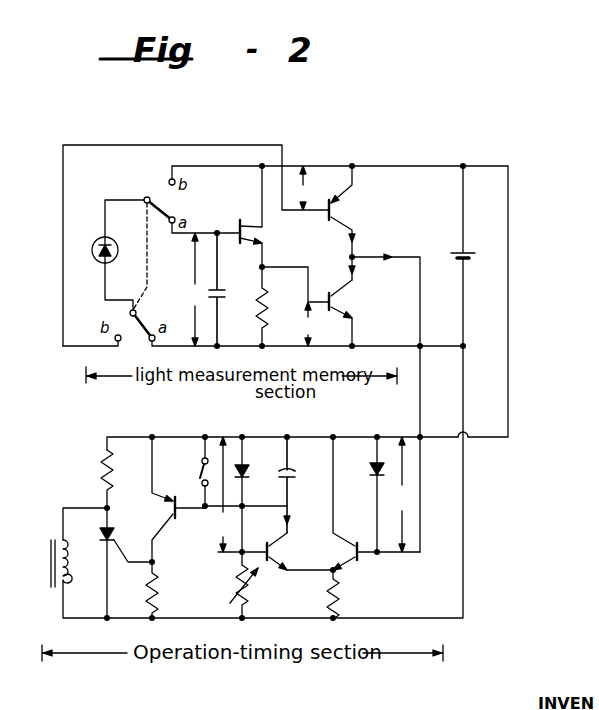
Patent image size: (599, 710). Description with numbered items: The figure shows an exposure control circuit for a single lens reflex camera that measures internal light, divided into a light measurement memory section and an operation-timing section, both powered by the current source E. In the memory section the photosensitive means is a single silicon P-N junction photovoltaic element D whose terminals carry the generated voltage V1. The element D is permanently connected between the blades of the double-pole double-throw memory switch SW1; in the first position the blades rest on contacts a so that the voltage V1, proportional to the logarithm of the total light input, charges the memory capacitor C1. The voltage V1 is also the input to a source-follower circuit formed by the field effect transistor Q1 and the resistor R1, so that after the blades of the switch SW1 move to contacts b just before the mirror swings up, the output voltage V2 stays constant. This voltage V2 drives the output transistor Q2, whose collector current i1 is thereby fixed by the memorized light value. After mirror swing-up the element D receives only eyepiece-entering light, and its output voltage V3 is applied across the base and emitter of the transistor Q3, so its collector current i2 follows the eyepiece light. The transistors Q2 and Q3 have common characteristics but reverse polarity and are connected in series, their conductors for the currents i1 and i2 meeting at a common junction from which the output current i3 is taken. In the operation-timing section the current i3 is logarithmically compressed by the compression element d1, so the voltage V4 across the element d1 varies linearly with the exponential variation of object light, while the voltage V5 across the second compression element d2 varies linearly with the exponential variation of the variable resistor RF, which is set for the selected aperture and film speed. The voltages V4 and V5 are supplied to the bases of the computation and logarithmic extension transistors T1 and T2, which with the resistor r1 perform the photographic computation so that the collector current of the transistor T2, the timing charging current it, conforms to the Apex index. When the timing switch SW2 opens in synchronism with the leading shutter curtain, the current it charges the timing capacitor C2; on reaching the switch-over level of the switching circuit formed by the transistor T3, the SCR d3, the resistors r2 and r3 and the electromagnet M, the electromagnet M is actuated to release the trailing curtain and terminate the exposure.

The photovoltaic element D is at (110, 242).
The memory switch SW1 is at (149, 260).
The generated voltage V1 is at (195, 289).
The memory capacitor C1 is at (225, 289).
The field effect transistor Q1 is at (243, 216).
The resistor R1 is at (271, 306).
The output voltage of source-follower circuit V2 is at (308, 324).
The output voltage of photosensitive means V3 is at (304, 188).
The transistor Q3 is at (353, 211).
The collector current i1 is at (351, 274).
The collector current i2 is at (351, 244).
The output current i3 is at (386, 287).
The transistor Q2 is at (353, 313).
The current source E is at (470, 256).
The resistor r2 is at (98, 479).
The electromagnet M is at (52, 536).
The SCR d3 is at (116, 563).
The transistor T3 is at (178, 518).
The resistor r3 is at (143, 590).
The timing switch SW2 is at (184, 471).
The second logarithmic compression element d2 is at (251, 494).
The variable resistor RF is at (220, 585).
The voltage across second logarithmic compression element V5 is at (228, 494).
The timing capacitor C2 is at (294, 485).
The timing charging current it is at (290, 520).
The computation and logarithmic extension transistor T2 is at (270, 565).
The computation and logarithmic extension transistor T1 is at (376, 513).
The resistor r1 is at (340, 594).
The logarithmic compression element d1 is at (366, 494).
The voltage across logarithmic compression element V4 is at (402, 494).